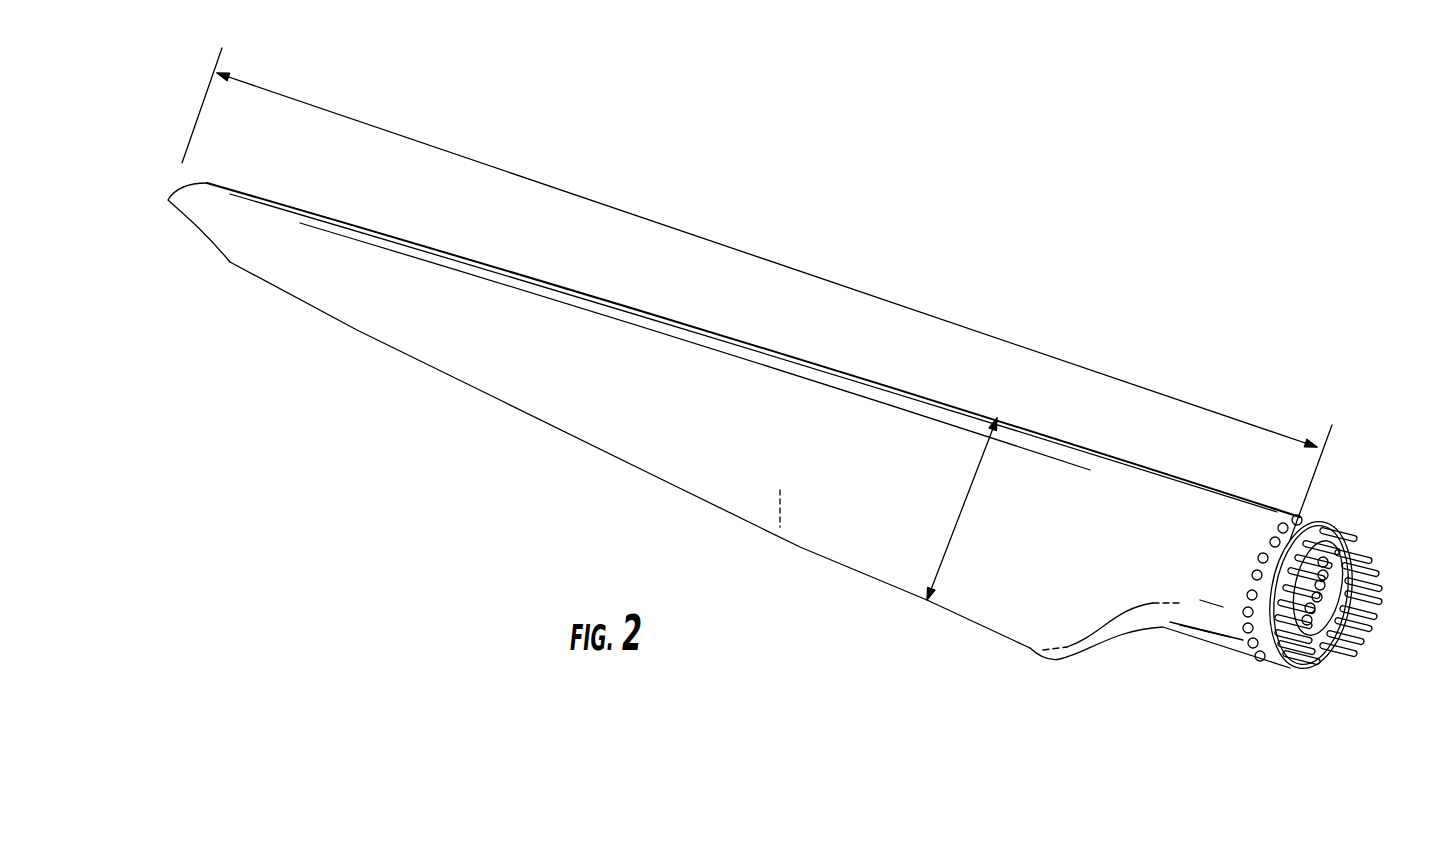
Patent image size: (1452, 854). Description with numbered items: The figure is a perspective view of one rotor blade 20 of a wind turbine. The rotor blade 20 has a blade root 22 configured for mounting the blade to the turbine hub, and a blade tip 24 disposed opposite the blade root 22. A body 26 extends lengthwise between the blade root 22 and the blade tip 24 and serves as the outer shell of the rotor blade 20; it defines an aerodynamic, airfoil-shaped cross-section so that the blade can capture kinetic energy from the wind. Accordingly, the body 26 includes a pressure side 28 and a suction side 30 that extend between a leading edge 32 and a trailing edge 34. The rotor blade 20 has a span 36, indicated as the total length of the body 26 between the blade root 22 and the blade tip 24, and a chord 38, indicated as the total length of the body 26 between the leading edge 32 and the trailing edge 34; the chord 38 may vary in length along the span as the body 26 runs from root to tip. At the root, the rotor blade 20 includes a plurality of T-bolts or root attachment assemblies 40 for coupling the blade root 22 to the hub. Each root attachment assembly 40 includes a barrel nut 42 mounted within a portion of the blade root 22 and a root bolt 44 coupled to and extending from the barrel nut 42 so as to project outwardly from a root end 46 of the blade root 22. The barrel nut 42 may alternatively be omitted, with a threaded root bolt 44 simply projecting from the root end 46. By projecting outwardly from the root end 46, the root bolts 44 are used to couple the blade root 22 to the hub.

The rotor blade 20 is at (1182, 288).
The blade root 22 is at (1243, 640).
The blade tip 24 is at (168, 199).
The body 26 is at (608, 330).
The pressure side 28 is at (780, 527).
The suction side 30 is at (490, 357).
The leading edge 32 is at (828, 370).
The trailing edge 34 is at (617, 458).
The span 36 is at (805, 273).
The chord 38 is at (958, 525).
The root attachment assembly 40 is at (1233, 590).
The barrel nut 42 is at (1377, 580).
The root bolt 44 is at (1270, 537).
The root end 46 is at (1293, 660).